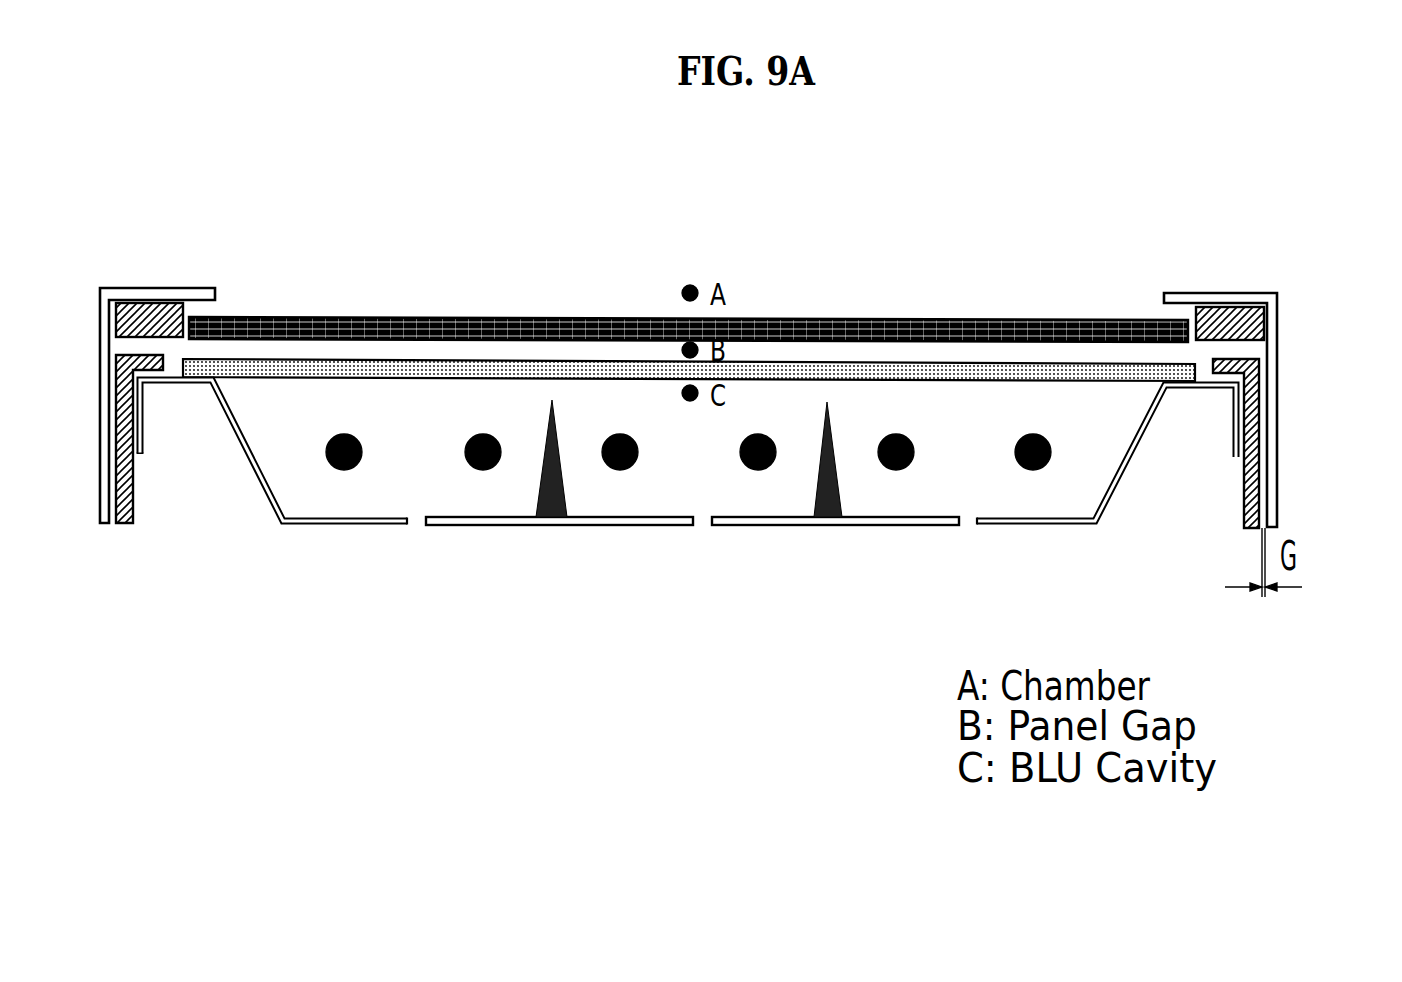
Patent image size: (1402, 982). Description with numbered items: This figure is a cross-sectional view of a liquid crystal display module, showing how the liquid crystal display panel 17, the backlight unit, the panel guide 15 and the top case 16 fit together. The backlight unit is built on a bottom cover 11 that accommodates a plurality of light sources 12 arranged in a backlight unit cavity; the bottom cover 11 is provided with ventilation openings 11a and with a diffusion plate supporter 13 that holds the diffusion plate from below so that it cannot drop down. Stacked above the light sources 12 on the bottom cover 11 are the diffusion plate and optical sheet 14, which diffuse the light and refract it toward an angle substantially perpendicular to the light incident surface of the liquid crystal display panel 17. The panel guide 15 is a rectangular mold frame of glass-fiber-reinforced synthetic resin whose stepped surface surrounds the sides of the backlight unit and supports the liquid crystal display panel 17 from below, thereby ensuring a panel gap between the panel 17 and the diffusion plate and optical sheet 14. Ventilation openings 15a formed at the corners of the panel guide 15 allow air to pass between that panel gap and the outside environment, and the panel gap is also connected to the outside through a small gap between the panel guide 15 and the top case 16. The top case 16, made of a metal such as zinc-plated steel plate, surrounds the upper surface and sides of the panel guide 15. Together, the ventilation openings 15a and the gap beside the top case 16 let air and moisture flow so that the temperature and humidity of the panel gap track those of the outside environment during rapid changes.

The bottom cover 11 is at (1132, 455).
The ventilation openings 11a is at (703, 530).
The light sources 12 is at (1033, 470).
The diffusion plate supporter 13 is at (820, 525).
The diffusion plate and optical sheet 14 is at (935, 373).
The panel guide 15 is at (1258, 452).
The ventilation openings 15a is at (167, 347).
The top case 16 is at (1273, 405).
The liquid crystal display panel 17 is at (818, 318).